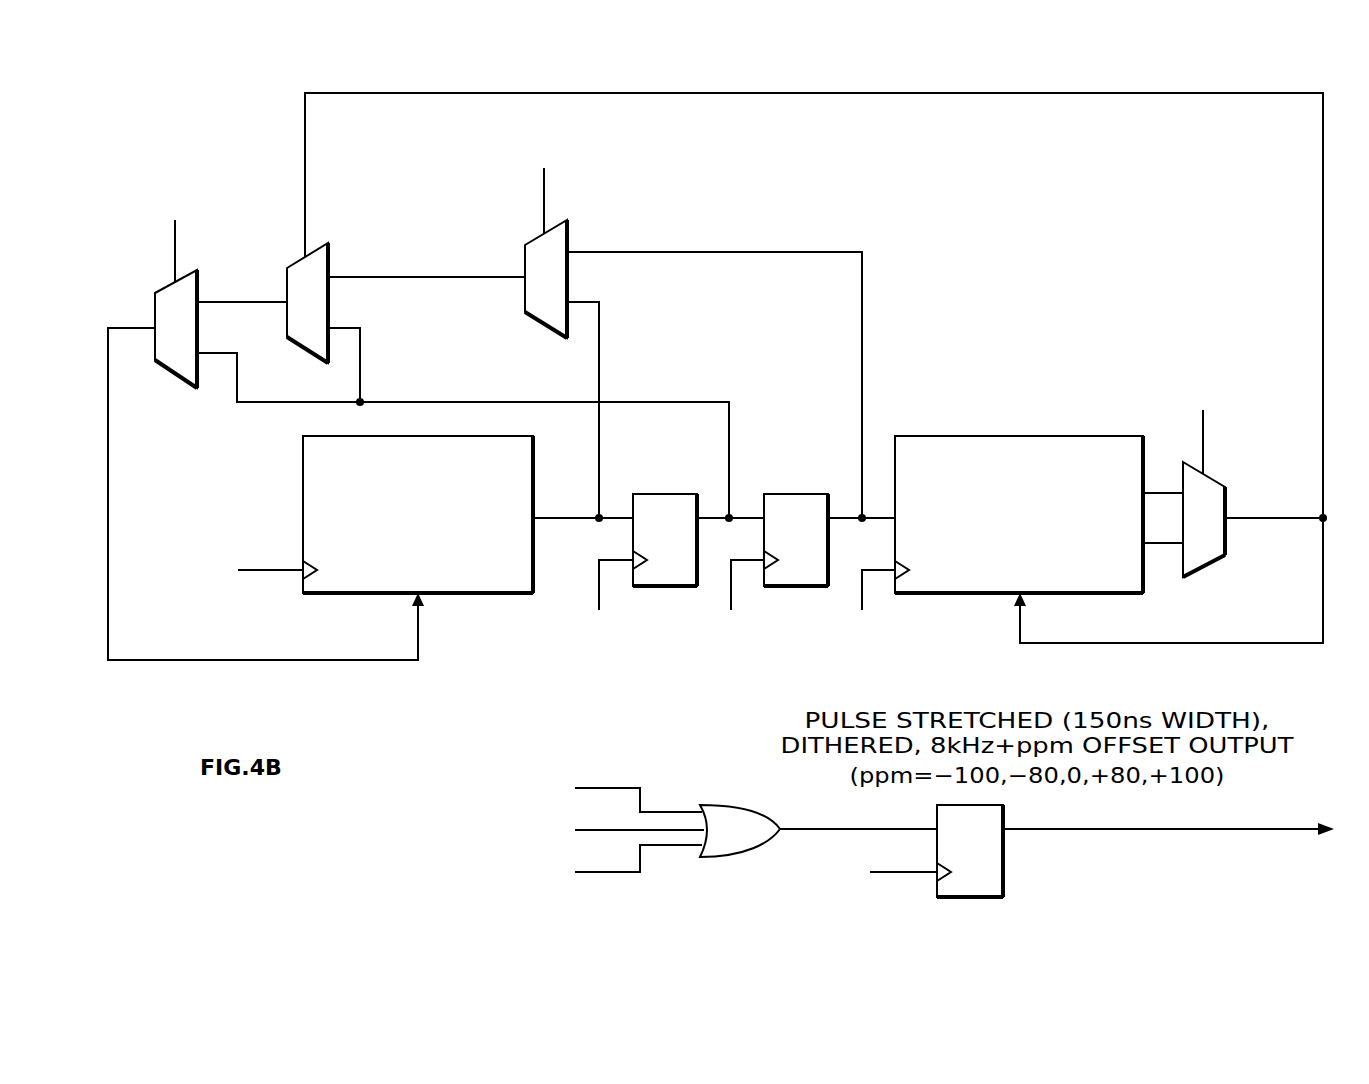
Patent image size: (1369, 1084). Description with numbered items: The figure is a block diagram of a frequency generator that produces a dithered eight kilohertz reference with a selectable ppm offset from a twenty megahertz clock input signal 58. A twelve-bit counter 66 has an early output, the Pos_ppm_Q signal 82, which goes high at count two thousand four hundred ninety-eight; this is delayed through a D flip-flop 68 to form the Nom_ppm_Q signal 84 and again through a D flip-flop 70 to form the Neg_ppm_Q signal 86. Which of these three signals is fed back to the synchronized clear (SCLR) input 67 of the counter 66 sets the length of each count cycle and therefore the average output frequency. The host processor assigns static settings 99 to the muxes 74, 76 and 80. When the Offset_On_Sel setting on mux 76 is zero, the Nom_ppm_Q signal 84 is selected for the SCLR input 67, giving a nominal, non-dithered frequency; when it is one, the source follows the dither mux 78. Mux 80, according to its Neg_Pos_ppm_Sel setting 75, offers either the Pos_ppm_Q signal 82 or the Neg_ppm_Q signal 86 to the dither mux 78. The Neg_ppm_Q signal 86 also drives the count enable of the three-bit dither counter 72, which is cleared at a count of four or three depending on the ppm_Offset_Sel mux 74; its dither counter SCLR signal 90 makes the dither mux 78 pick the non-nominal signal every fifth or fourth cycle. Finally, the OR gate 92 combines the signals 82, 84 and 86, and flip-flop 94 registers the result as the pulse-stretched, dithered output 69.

The Neg_Pos_ppm_Sel setting 75 is at (147, 102).
The static settings 99 is at (175, 248).
The mux 76 is at (200, 325).
The dither multiplexer 78 is at (330, 300).
The mux 80 is at (568, 275).
The Nom_ppm_Q signal 84 is at (400, 402).
The Pos_ppm_Q signal 82 is at (600, 372).
The Neg_ppm_Q signal 86 is at (830, 252).
The 12-bit counter 66 is at (303, 470).
The 20 MHz clock input signal 58 is at (271, 568).
The synchronized clear (SCLR) input 67 is at (206, 660).
The D flip-flop 68 is at (667, 494).
The D flip-flop 70 is at (797, 494).
The dither counter 72 is at (1025, 436).
The ppm_Offset_Sel mux 74 is at (1210, 580).
The dither counter SCLR signal 90 is at (1323, 577).
The OR gate 92 is at (730, 805).
The flip-flop 94 is at (1005, 870).
The dithered output 69 is at (1150, 832).